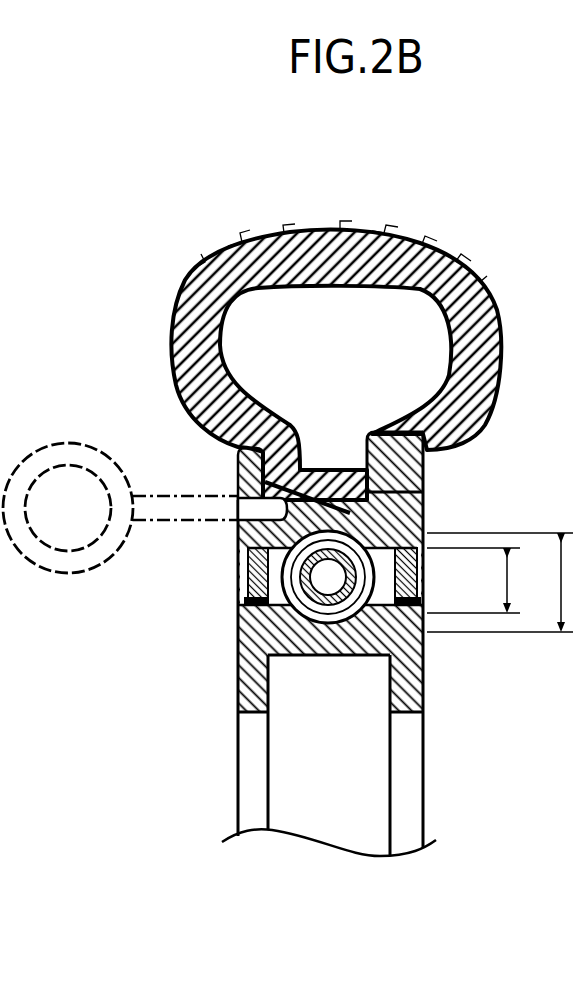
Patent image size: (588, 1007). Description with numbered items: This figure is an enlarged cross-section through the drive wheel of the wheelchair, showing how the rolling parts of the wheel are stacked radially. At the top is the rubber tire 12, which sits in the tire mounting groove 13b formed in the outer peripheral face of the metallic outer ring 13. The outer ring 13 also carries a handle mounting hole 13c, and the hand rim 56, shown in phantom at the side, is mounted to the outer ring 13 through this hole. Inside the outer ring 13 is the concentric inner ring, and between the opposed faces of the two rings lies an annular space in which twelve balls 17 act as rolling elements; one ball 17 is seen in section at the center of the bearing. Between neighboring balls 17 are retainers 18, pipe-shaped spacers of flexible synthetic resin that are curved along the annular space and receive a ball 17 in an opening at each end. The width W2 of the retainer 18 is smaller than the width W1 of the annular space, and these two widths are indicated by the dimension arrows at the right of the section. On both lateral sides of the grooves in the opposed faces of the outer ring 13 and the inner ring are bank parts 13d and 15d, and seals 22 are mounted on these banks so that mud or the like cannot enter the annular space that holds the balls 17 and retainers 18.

The tire 12 is at (500, 308).
The outer ring 13 is at (430, 492).
The tire mounting groove 13b is at (371, 430).
The handle mounting hole 13c is at (240, 500).
The bank part 13d is at (430, 565).
The bank part 15d is at (252, 600).
The ball 17 is at (298, 608).
The retainer 18 is at (312, 598).
The seal 22 is at (428, 588).
The hand rim 56 is at (72, 445).
The width of the annular space W1 is at (500, 582).
The width of the retainer W2 is at (473, 580).